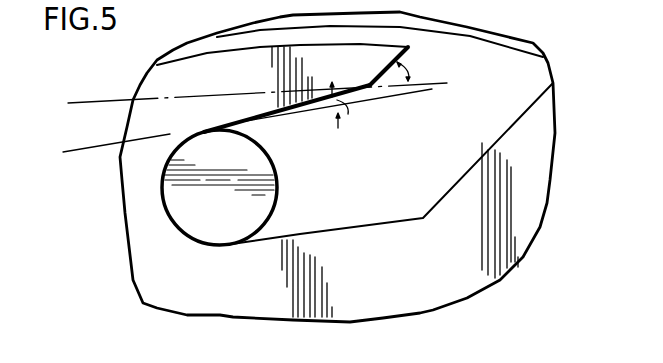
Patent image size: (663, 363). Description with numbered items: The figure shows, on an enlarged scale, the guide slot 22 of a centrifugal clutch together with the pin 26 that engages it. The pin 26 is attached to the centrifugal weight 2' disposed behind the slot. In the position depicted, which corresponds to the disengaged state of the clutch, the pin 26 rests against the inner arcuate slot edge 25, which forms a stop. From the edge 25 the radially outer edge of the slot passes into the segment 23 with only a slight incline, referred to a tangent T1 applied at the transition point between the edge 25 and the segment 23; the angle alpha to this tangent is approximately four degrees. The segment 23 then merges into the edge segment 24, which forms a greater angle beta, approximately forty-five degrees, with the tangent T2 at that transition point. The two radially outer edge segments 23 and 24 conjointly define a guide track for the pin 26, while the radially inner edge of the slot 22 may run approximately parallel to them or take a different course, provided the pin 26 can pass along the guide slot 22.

The guide slot 22 is at (401, 207).
The segment 23 is at (320, 103).
The edge segment 24 is at (380, 78).
The inner arcuate slot edge 25 is at (161, 204).
The pin 26 is at (230, 224).
The centrifugal weight 2' is at (310, 67).
The tangent T1 is at (72, 151).
The tangent T2 is at (82, 102).